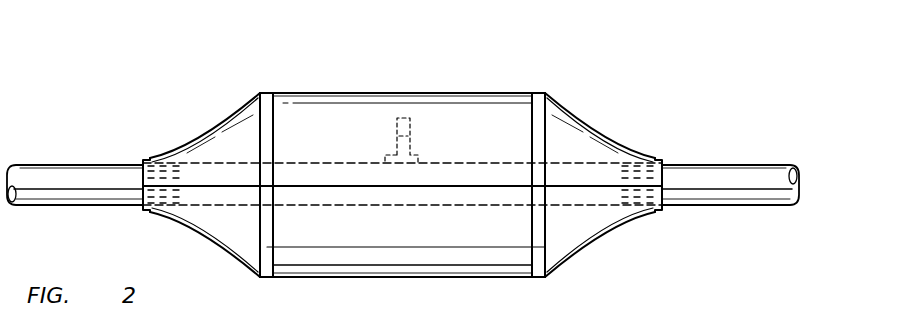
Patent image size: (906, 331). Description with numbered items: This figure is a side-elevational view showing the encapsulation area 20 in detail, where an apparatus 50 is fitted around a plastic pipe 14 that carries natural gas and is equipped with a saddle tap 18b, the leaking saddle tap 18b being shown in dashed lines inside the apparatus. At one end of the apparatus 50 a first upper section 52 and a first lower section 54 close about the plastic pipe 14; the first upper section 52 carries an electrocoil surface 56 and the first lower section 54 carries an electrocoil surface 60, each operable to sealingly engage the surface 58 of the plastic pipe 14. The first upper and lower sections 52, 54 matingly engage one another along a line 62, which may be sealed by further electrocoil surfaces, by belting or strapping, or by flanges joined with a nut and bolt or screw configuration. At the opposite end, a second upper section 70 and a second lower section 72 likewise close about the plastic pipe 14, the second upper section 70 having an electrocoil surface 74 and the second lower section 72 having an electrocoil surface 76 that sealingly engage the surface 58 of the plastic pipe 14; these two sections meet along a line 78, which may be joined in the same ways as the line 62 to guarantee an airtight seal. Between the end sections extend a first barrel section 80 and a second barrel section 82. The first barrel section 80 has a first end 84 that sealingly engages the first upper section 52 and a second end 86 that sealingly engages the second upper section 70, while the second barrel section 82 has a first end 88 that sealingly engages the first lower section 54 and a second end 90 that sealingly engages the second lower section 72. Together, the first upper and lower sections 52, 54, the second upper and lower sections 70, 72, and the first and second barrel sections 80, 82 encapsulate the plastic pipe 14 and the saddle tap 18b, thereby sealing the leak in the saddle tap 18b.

The plastic pipe 14 is at (733, 172).
The saddle tap 18b is at (408, 145).
The encapsulation area 20 is at (197, 182).
The apparatus 50 is at (630, 196).
The first upper section 52 is at (227, 125).
The first lower section 54 is at (207, 237).
The electrocoil surface 56 is at (162, 160).
The surface of the plastic pipe 58 is at (72, 172).
The electrocoil surface 60 is at (160, 210).
The line 62 is at (197, 178).
The second upper section 70 is at (588, 137).
The second lower section 72 is at (610, 230).
The electrocoil surface 74 is at (640, 170).
The electrocoil surface 76 is at (643, 210).
The line 78 is at (590, 182).
The first barrel section 80 is at (373, 97).
The second barrel section 82 is at (392, 270).
The first end 84 is at (283, 102).
The second end 86 is at (525, 102).
The first end 88 is at (278, 273).
The second end 90 is at (523, 270).